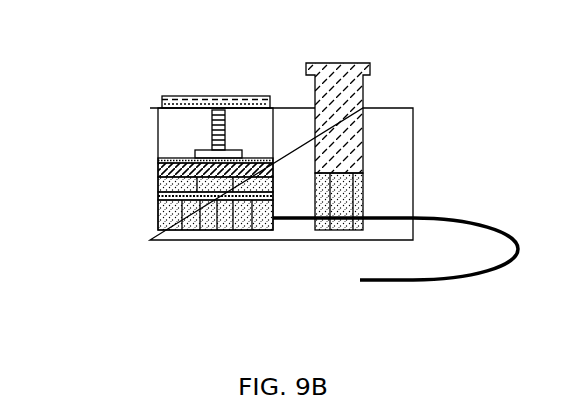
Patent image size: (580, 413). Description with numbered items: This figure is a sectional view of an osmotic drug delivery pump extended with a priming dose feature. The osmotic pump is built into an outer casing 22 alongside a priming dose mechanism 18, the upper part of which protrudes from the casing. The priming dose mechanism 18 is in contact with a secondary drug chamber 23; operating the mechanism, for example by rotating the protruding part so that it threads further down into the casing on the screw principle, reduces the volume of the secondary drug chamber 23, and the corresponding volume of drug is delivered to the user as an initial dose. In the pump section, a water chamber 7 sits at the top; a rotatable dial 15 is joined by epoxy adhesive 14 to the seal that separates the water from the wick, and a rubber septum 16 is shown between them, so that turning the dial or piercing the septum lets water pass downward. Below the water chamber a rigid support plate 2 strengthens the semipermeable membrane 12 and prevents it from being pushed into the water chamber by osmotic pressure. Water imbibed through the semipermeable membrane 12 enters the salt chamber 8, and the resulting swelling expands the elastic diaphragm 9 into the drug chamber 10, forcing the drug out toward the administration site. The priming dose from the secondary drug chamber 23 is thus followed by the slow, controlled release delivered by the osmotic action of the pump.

The rigid support plate 2 is at (152, 163).
The water chamber 7 is at (180, 140).
The salt chamber 8 is at (151, 189).
The elastic diaphragm 9 is at (151, 198).
The drug chamber 10 is at (213, 231).
The semipermeable membrane 12 is at (152, 172).
The epoxy adhesive 14 is at (213, 150).
The rotatable dial 15 is at (160, 100).
The rubber septum 16 is at (237, 150).
The priming dose mechanism 18 is at (365, 91).
The outer casing 22 is at (314, 242).
The secondary drug chamber 23 is at (367, 196).